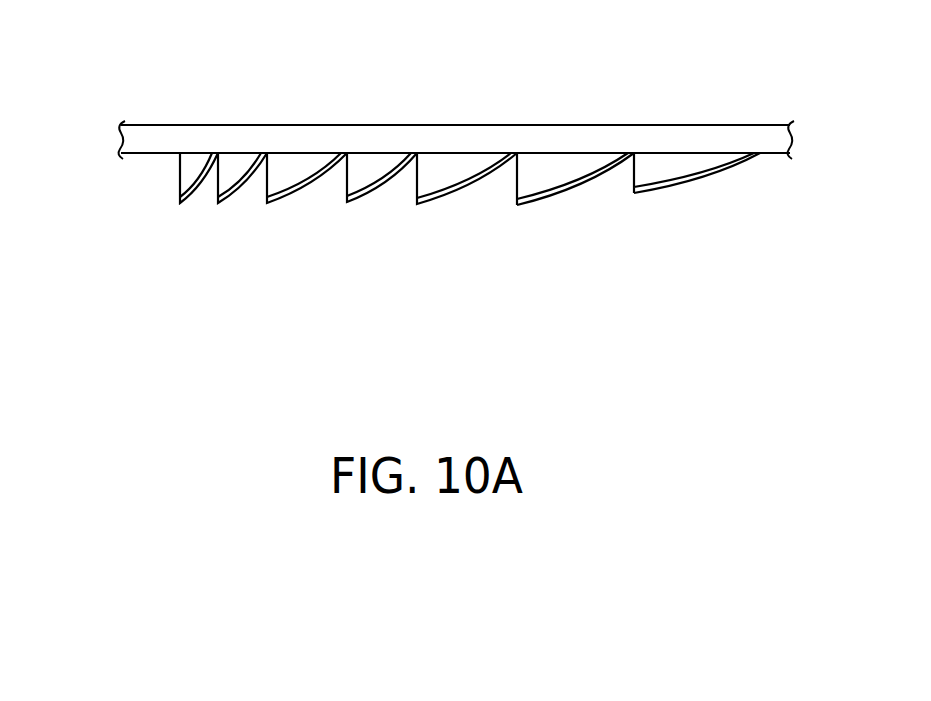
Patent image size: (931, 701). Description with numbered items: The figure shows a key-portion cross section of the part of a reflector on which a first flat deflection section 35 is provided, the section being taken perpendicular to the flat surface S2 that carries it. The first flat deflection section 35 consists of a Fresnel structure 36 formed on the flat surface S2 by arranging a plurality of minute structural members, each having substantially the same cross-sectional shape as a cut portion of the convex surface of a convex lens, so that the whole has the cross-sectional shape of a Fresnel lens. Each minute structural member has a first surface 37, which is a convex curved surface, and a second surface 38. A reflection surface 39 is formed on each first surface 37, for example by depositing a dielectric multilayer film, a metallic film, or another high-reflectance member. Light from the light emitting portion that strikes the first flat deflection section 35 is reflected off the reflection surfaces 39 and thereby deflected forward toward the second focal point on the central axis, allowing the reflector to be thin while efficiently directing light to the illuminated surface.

The first flat deflection section 35 is at (217, 270).
The Fresnel structure 36 is at (675, 166).
The first surface 37 is at (591, 175).
The second surface 38 is at (521, 172).
The reflection surface 39 is at (704, 179).
The flat surface S2 is at (160, 153).